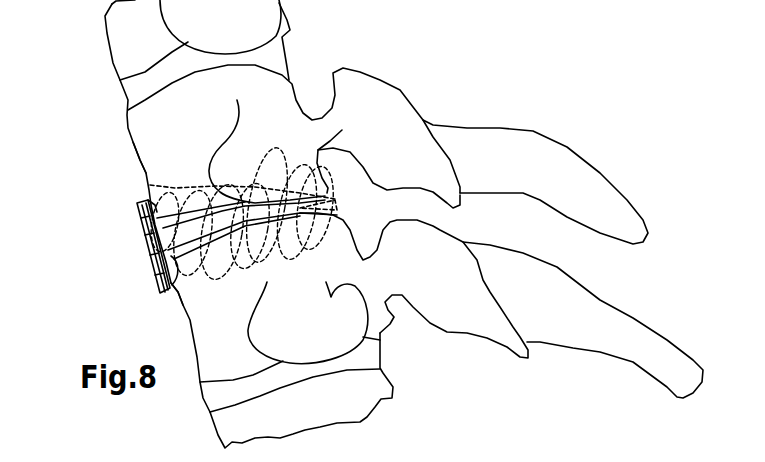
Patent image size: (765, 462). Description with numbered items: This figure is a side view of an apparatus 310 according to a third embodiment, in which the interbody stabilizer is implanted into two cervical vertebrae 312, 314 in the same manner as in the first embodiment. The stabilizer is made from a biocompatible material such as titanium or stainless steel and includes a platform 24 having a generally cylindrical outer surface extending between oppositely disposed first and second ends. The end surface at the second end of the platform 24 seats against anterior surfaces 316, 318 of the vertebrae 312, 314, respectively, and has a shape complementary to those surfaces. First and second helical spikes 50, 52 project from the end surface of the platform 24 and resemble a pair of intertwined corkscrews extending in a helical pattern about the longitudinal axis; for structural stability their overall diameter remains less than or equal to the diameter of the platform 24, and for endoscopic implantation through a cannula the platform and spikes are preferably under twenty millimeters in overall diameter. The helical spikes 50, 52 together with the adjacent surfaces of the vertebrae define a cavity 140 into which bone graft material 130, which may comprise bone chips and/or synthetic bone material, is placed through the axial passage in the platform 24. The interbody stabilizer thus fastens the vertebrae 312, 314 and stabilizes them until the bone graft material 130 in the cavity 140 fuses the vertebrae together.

The apparatus 310 is at (78, 195).
The cervical vertebra 312 is at (113, 126).
The cervical vertebra 314 is at (178, 321).
The anterior surface 316 is at (144, 169).
The anterior surface 318 is at (182, 297).
The platform 24 is at (137, 208).
The first helical spike 50 is at (300, 262).
The second helical spike 52 is at (268, 156).
The bone graft material 130 is at (337, 202).
The cavity 140 is at (150, 185).